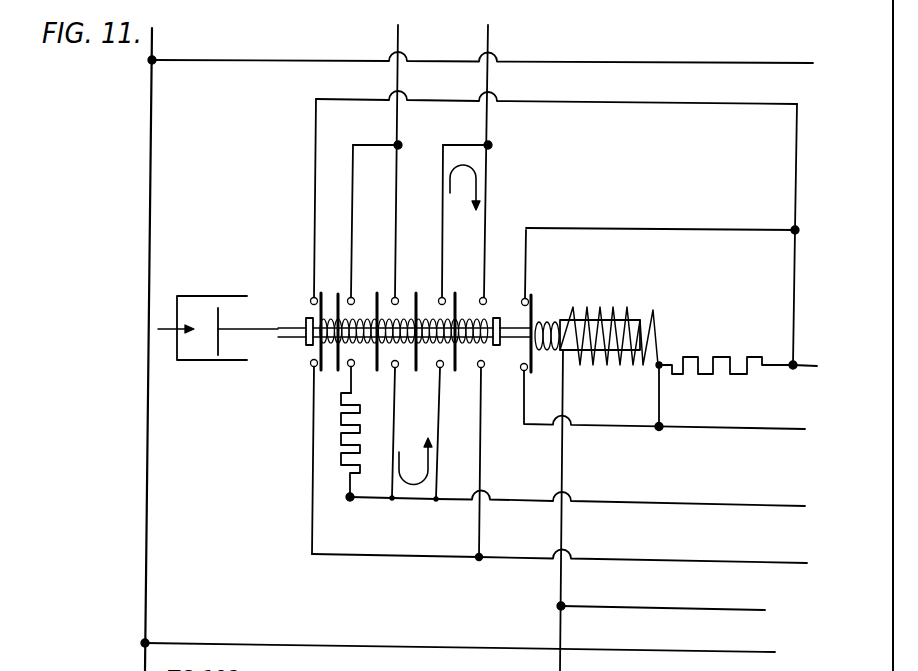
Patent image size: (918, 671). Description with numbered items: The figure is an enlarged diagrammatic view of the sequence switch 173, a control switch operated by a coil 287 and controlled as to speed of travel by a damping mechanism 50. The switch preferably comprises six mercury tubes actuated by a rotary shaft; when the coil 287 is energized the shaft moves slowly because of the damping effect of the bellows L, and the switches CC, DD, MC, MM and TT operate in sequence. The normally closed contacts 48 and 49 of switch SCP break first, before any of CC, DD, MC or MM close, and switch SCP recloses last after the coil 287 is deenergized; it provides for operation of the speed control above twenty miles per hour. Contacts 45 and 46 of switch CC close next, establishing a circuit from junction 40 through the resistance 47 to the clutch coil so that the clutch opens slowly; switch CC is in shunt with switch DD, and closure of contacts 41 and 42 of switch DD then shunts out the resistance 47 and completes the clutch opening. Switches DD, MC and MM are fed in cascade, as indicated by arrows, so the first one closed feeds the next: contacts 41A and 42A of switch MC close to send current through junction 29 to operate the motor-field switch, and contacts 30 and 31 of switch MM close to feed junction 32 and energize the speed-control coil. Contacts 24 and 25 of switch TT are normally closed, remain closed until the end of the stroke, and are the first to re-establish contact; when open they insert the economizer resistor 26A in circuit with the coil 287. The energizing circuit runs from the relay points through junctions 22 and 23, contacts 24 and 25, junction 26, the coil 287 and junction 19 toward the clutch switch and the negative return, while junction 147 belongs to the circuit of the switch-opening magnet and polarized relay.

The junction 147 is at (155, 63).
The sequence switch 173 is at (303, 254).
The damping mechanism 50 is at (207, 293).
The bellows L is at (193, 366).
The switch SCP is at (306, 286).
The contact 49 is at (310, 301).
The contact 48 is at (310, 365).
The contact 45 is at (349, 298).
The contact 46 is at (349, 367).
The junction 40 is at (395, 144).
The contact 41 is at (392, 298).
The contact 42 is at (396, 368).
The contact 41A is at (439, 298).
The contact 42A is at (441, 368).
The junction 29 is at (486, 144).
The contact 30 is at (481, 298).
The contact 31 is at (483, 368).
The switch CC is at (348, 355).
The switch DD is at (386, 370).
The switch MC is at (432, 374).
The switch MM is at (471, 374).
The resistance 47 is at (360, 443).
The junction 32 is at (477, 559).
The junction 19 is at (558, 606).
The switch TT is at (534, 285).
The contact 24 is at (529, 302).
The contact 25 is at (526, 371).
The junction 26 is at (656, 426).
The economizer resistor 26A is at (711, 375).
The junction 22 is at (791, 362).
The junction 23 is at (792, 228).
The coil 287 is at (655, 309).